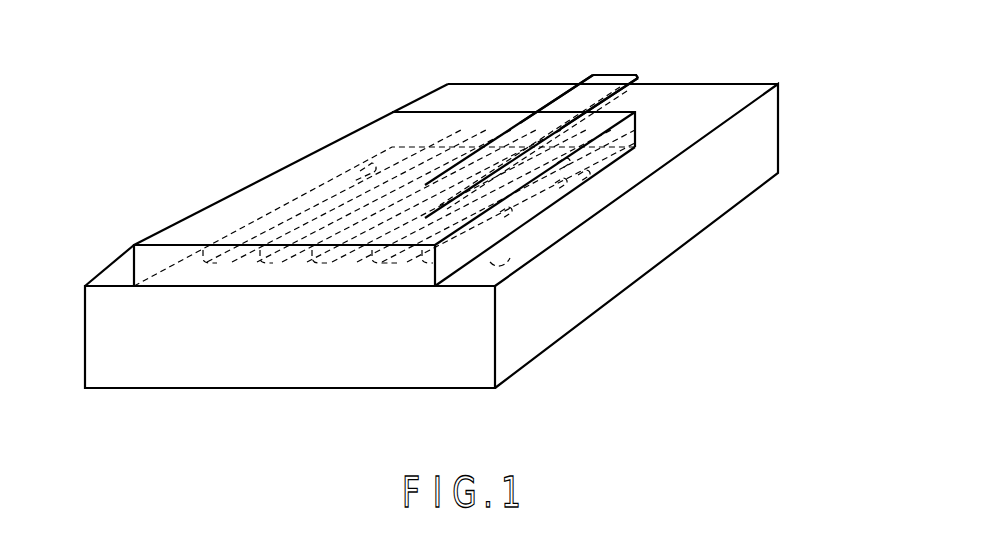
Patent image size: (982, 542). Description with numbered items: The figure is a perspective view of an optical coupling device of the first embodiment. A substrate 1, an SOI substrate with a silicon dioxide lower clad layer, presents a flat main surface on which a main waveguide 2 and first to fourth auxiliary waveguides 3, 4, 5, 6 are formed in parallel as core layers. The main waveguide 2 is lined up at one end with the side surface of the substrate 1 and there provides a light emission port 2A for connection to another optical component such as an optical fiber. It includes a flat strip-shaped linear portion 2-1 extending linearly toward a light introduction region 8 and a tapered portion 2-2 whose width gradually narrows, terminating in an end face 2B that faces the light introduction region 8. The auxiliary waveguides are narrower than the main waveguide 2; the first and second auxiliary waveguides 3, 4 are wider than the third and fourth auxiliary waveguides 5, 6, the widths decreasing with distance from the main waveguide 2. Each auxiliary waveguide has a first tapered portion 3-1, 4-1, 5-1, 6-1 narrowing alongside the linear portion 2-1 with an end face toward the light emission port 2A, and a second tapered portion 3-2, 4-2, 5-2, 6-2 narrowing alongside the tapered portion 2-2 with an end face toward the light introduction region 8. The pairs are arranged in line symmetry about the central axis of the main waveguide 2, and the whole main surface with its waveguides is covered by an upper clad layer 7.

The substrate 1 is at (108, 283).
The main waveguide 2 is at (484, 134).
The light emission port 2A is at (645, 78).
The end face 2B is at (317, 262).
The linear portion 2-1 is at (537, 125).
The tapered portion 2-2 is at (442, 170).
The first auxiliary waveguide 3 is at (352, 142).
The first tapered portion 3-1 is at (358, 126).
The second tapered portion 3-2 is at (253, 248).
The second auxiliary waveguide 4 is at (395, 248).
The first tapered portion 4-1 is at (557, 163).
The second tapered portion 4-2 is at (497, 262).
The third auxiliary waveguide 5 is at (300, 200).
The first tapered portion 5-1 is at (327, 185).
The second tapered portion 5-2 is at (250, 218).
The fourth auxiliary waveguide 6 is at (560, 183).
The first tapered portion 6-1 is at (580, 176).
The second tapered portion 6-2 is at (502, 212).
The upper clad layer 7 is at (198, 207).
The light introduction region 8 is at (303, 283).